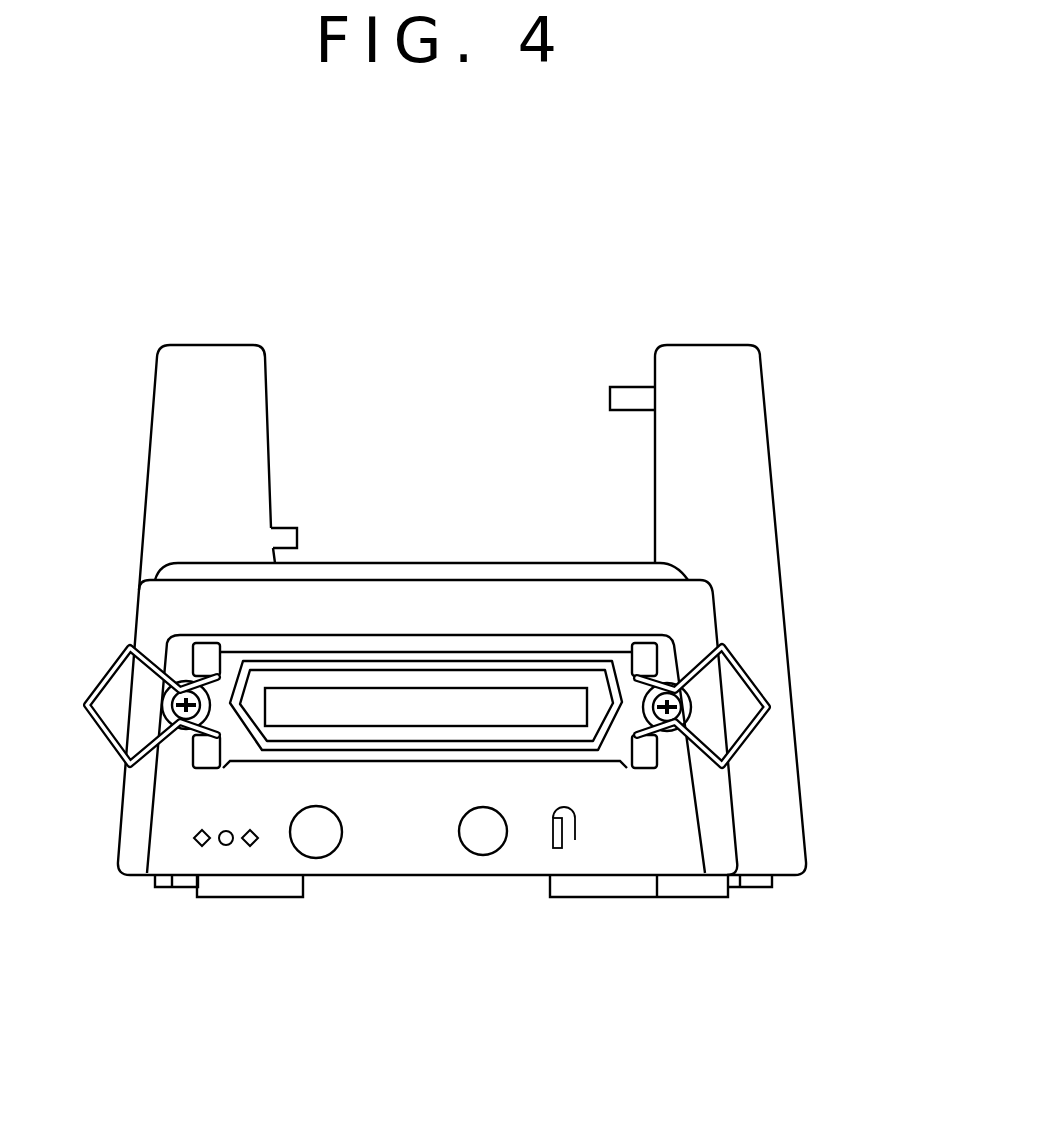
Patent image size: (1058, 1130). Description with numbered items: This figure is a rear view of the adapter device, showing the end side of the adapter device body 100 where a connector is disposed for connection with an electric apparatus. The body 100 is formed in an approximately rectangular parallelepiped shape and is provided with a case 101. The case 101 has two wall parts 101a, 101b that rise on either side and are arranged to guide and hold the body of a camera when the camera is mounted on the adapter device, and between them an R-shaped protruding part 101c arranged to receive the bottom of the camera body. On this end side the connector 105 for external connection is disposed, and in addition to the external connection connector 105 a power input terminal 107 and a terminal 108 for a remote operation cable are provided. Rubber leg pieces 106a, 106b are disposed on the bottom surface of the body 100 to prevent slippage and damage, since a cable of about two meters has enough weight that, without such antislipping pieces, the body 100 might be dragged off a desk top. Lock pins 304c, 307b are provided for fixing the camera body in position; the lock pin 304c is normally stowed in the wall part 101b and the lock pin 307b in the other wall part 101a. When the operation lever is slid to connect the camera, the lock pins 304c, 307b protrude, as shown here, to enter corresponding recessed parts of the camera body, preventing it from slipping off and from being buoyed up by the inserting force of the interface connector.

The adapter device body 100 is at (497, 623).
The case 101 is at (155, 622).
The wall part 101a is at (205, 360).
The wall part 101b is at (735, 365).
The R-shaped protruding part 101c is at (447, 574).
The lock pin 304c is at (622, 400).
The lock pin 307b is at (283, 542).
The connector for external connection 105 is at (555, 697).
The rubber leg piece 106a is at (237, 890).
The rubber leg piece 106b is at (625, 893).
The power input terminal 107 is at (319, 845).
The terminal for a remote operation cable 108 is at (483, 845).